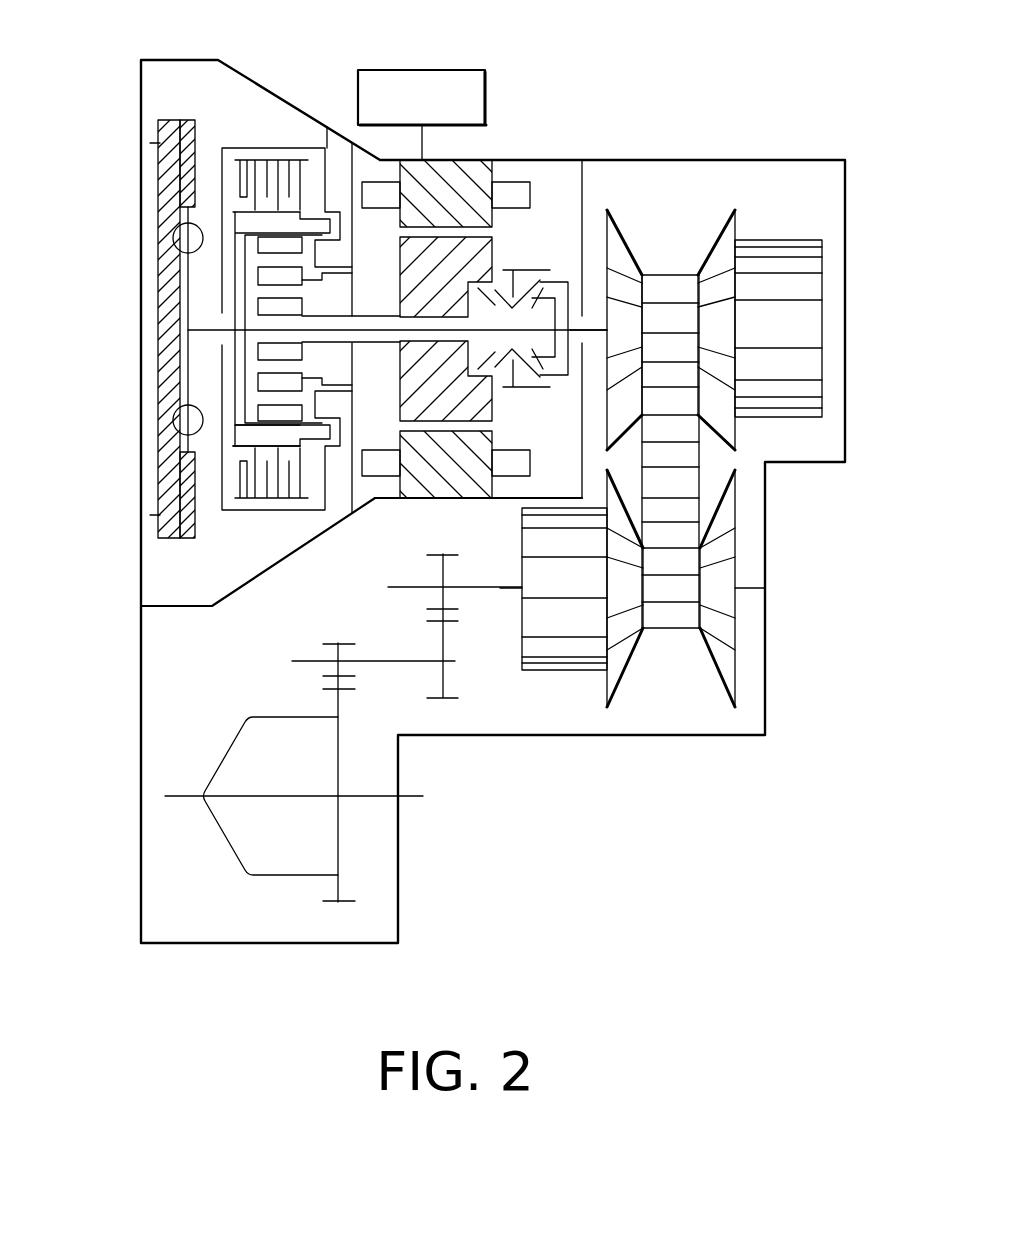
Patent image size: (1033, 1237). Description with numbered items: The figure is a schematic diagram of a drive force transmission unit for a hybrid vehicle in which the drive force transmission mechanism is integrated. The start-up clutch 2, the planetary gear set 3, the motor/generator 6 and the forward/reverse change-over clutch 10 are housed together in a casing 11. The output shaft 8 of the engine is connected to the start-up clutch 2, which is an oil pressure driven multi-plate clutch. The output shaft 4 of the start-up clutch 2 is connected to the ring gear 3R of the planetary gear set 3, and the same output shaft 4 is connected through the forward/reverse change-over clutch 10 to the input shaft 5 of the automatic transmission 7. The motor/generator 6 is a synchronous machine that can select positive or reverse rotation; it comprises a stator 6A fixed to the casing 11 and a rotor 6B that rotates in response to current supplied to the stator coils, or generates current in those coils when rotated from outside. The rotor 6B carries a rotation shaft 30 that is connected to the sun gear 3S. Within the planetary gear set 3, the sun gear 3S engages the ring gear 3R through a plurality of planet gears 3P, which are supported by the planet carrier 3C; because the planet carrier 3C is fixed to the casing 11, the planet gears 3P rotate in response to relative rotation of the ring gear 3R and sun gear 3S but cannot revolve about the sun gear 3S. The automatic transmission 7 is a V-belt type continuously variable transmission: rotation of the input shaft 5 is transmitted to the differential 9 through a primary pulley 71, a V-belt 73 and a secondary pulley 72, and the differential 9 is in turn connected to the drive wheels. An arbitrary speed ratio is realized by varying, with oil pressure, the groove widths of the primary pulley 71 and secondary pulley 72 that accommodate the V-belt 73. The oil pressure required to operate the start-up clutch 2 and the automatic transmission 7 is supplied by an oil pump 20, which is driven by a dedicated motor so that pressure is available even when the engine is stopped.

The start-up clutch 2 is at (253, 134).
The planetary gear set 3 is at (209, 407).
The sun gear 3S is at (264, 352).
The planet gears 3P is at (264, 381).
The planet carrier 3C is at (330, 388).
The ring gear 3R is at (273, 416).
The output shaft 4 is at (367, 323).
The input shaft 5 is at (593, 326).
The motor/generator 6 is at (461, 187).
The stator 6A is at (470, 488).
The rotor 6B is at (487, 400).
The automatic transmission 7 is at (822, 226).
The output shaft 8 is at (206, 326).
The differential 9 is at (316, 831).
The forward/reverse change-over clutch 10 is at (541, 255).
The casing 11 is at (284, 100).
The oil pump 20 is at (395, 70).
The rotation shaft 30 is at (380, 345).
The primary pulley 71 is at (716, 232).
The secondary pulley 72 is at (723, 632).
The V-belt 73 is at (692, 433).